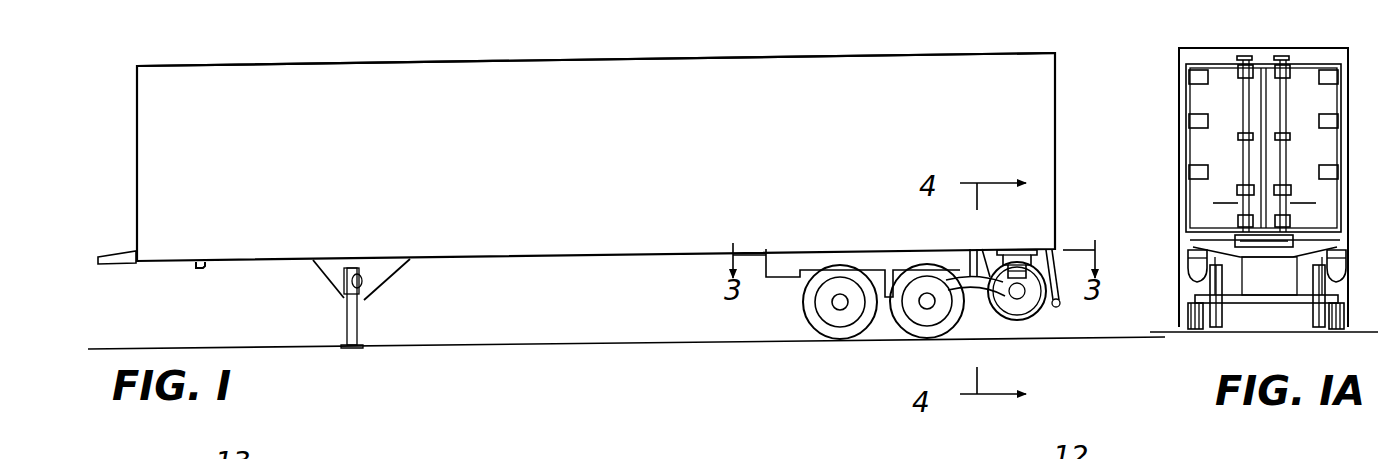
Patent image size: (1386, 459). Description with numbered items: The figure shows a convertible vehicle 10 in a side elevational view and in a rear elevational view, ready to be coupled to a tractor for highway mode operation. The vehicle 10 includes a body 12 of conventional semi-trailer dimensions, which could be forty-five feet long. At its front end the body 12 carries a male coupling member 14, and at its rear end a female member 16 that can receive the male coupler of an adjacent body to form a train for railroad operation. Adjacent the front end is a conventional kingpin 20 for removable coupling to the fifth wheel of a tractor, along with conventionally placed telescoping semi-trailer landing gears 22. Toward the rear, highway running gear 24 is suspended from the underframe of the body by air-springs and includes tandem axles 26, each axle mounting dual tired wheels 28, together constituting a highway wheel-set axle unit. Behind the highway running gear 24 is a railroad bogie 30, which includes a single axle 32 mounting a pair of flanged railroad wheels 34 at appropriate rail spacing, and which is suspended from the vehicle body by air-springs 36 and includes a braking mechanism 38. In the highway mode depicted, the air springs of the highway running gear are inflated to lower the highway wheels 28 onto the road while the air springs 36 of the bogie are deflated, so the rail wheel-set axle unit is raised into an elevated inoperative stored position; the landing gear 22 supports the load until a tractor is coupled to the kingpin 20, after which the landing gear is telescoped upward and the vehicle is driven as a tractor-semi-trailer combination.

In FIG. 1, the vehicle 10 is at (1080, 127).
In FIG. 1, the body 12 is at (1046, 82).
In FIG. 1A, the body 12 is at (1263, 257).
In FIG. 1, the male coupling member 14 is at (117, 263).
In FIG. 1A, the female member 16 is at (1263, 247).
In FIG. 1, the kingpin 20 is at (204, 268).
In FIG. 1, the landing gears 22 is at (359, 318).
In FIG. 1, the highway running gear 24 is at (786, 358).
In FIG. 1, the tandem axles 26 is at (836, 303).
In FIG. 1, the dual tired wheels 28 is at (818, 328).
In FIG. 1A, the dual tired wheels 28 is at (1193, 330).
In FIG. 1, the railroad bogie 30 is at (1048, 320).
In FIG. 1A, the single axle 32 is at (1252, 290).
In FIG. 1, the flanged railroad wheels 34 is at (1020, 322).
In FIG. 1A, the flanged railroad wheels 34 is at (1208, 328).
In FIG. 1, the air-springs 36 is at (1011, 250).
In FIG. 1A, the air-springs 36 is at (1187, 265).
In FIG. 1, the braking mechanism 38 is at (978, 248).